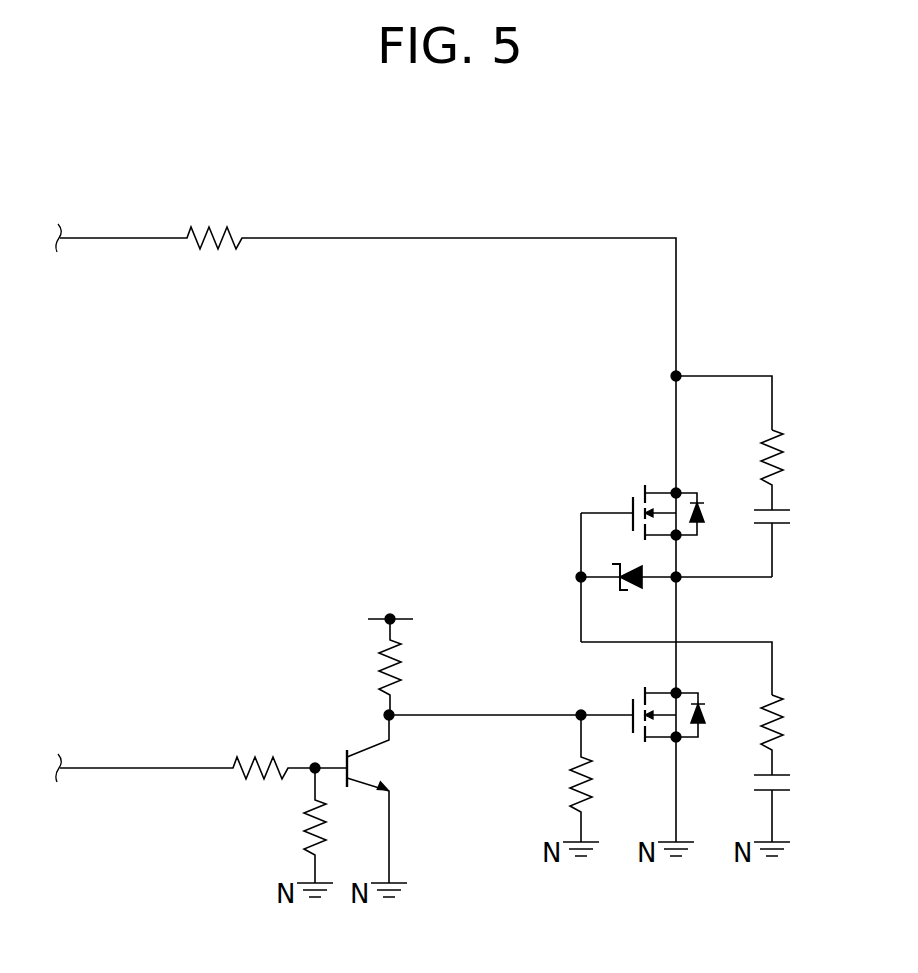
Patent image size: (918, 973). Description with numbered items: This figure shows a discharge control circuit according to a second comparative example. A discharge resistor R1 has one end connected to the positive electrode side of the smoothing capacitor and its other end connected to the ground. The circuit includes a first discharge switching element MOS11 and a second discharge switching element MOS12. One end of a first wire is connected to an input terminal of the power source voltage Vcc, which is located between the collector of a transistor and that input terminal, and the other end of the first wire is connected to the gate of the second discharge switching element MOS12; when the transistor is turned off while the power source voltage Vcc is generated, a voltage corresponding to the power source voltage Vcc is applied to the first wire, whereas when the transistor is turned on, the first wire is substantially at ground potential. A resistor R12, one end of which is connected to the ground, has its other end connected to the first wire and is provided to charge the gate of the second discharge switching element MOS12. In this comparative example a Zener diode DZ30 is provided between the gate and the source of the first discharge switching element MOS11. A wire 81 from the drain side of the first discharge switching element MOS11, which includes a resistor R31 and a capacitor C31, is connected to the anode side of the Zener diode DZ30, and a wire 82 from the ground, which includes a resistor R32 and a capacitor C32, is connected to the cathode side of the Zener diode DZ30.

The wire 81 is at (723, 376).
The wire 82 is at (723, 642).
The discharge resistor R1 is at (368, 534).
The resistor R31 is at (799, 470).
The capacitor C31 is at (798, 541).
The resistor R32 is at (799, 735).
The capacitor C32 is at (798, 806).
The resistor R12 is at (555, 778).
The first discharge switching element MOS11 is at (640, 478).
The second discharge switching element MOS12 is at (640, 680).
The Zener diode DZ30 is at (676, 577).
The power source voltage Vcc is at (390, 648).